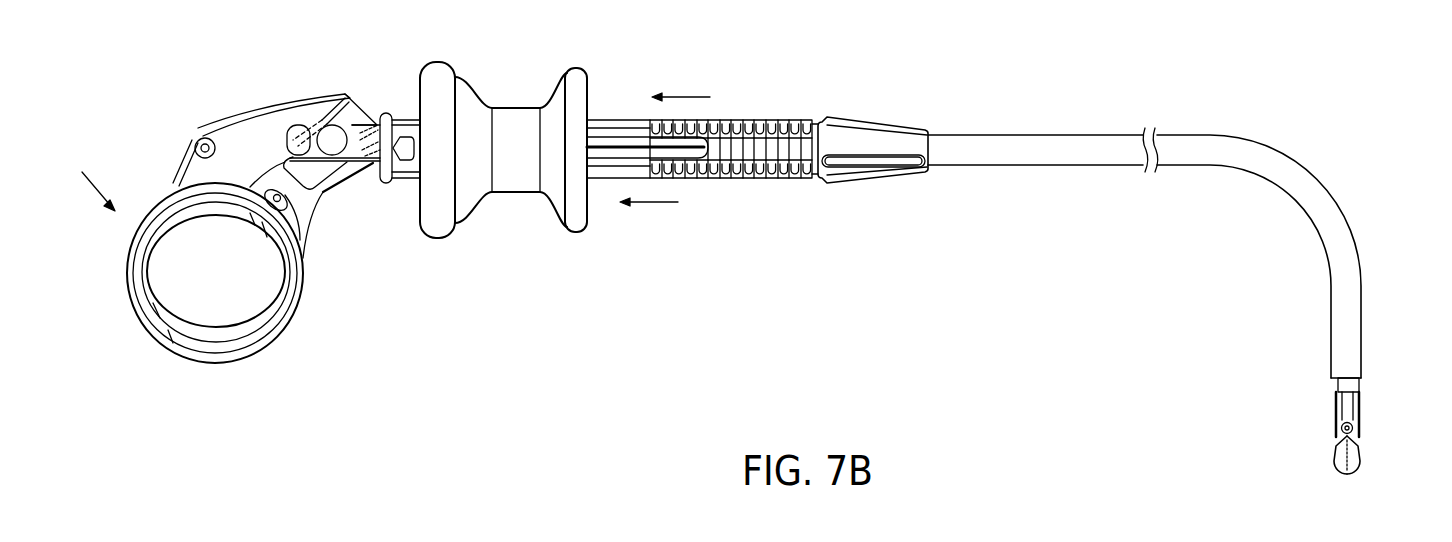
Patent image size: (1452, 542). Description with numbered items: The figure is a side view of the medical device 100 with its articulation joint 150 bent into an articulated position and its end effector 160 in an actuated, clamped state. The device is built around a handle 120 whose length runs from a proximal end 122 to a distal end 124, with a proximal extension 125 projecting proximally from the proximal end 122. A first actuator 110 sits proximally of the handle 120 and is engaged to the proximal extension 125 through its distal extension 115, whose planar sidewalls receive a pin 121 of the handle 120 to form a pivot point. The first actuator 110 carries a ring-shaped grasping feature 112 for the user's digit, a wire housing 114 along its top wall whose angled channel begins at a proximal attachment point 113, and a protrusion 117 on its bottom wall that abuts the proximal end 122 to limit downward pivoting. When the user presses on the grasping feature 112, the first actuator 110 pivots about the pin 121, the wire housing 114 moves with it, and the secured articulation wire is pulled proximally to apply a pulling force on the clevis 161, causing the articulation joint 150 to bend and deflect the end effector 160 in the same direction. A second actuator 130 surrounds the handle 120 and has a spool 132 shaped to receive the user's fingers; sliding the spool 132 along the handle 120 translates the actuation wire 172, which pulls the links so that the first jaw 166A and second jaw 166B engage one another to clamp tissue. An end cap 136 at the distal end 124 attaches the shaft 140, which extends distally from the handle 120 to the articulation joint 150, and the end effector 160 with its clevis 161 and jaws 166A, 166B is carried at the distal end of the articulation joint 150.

The medical device 100 is at (1300, 80).
The first actuator 110 is at (156, 342).
The grasping feature 112 is at (153, 215).
The proximal attachment point 113 is at (200, 142).
The wire housing 114 is at (257, 133).
The distal extension 115 is at (322, 170).
The protrusion 117 is at (380, 172).
The handle 120 is at (404, 235).
The pin 121 is at (332, 138).
The proximal end 122 is at (386, 116).
The distal end 124 is at (808, 120).
The proximal extension 125 is at (300, 127).
The second actuator 130 is at (546, 235).
The spool 132 is at (513, 104).
The end cap 136 is at (883, 187).
The shaft 140 is at (973, 140).
The articulation joint 150 is at (1188, 145).
The end effector 160 is at (1373, 378).
The clevis 161 is at (1347, 395).
The first jaw 166A is at (1355, 450).
The second jaw 166B is at (1338, 450).
The actuation wire 172 is at (606, 140).